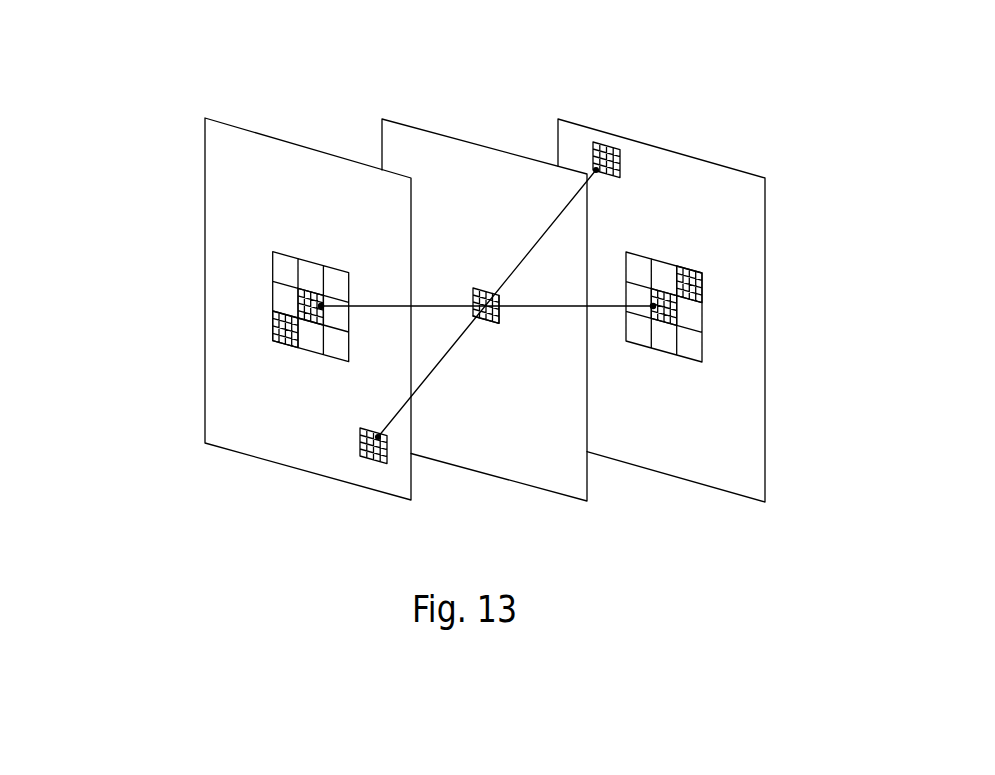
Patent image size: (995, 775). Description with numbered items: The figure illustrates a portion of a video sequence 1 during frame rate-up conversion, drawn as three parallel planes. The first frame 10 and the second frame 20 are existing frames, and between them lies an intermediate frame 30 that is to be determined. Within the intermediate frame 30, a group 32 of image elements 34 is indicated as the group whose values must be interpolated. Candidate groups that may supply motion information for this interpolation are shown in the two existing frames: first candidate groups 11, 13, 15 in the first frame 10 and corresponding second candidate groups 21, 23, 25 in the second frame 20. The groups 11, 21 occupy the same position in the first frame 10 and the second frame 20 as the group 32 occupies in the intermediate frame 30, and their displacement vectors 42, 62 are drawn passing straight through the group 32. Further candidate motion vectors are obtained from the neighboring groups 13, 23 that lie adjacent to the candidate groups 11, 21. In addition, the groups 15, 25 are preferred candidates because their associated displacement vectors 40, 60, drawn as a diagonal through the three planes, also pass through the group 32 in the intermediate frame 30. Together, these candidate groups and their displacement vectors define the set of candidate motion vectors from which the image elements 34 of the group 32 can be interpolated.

The video sequence 1 is at (163, 73).
The first frame 10 is at (765, 341).
The first candidate group 11 is at (677, 313).
The neighboring group 13 is at (703, 292).
The first candidate group 15 is at (621, 167).
The second frame 20 is at (205, 279).
The second candidate group 21 is at (297, 297).
The neighboring group 23 is at (272, 333).
The second candidate group 25 is at (360, 440).
The intermediate frame 30 is at (498, 477).
The group of image elements 32 is at (479, 288).
The image element 34 is at (489, 325).
The displacement vector 40 is at (572, 207).
The displacement vector 42 is at (525, 311).
The displacement vector 60 is at (415, 399).
The displacement vector 62 is at (402, 305).